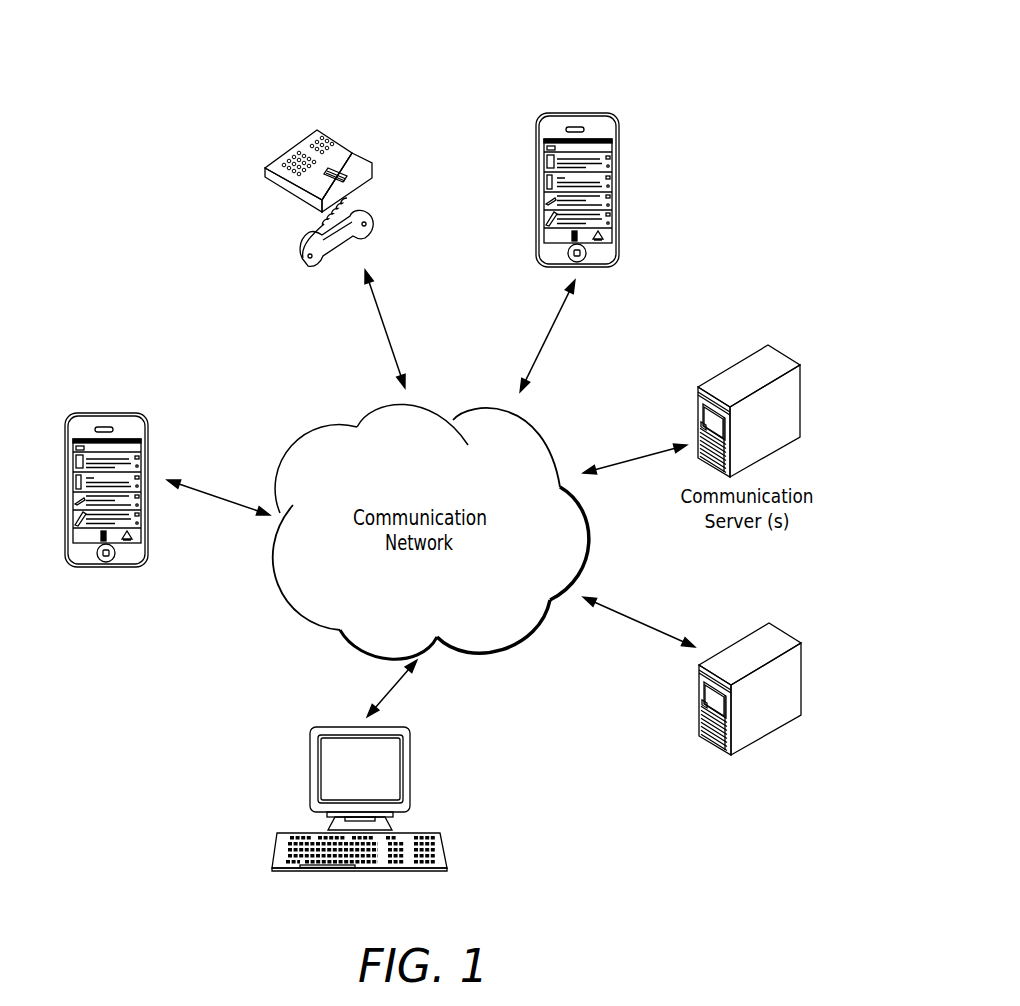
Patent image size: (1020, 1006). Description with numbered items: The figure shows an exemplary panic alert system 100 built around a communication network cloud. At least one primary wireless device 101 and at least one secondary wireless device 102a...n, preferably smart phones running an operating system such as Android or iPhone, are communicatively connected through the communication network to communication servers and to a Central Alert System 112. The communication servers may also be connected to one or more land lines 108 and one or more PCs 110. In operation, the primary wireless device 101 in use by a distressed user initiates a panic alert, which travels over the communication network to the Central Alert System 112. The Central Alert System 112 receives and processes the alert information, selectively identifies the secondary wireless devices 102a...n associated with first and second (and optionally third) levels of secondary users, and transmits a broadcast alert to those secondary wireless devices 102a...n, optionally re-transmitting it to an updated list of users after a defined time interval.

The panic alert system 100 is at (766, 64).
The primary wireless device 101 is at (105, 412).
The secondary wireless devices 102a...n is at (602, 113).
The land lines 108 is at (327, 137).
The PCs 110 is at (328, 727).
The Central Alert System (CAS) 112 is at (786, 632).